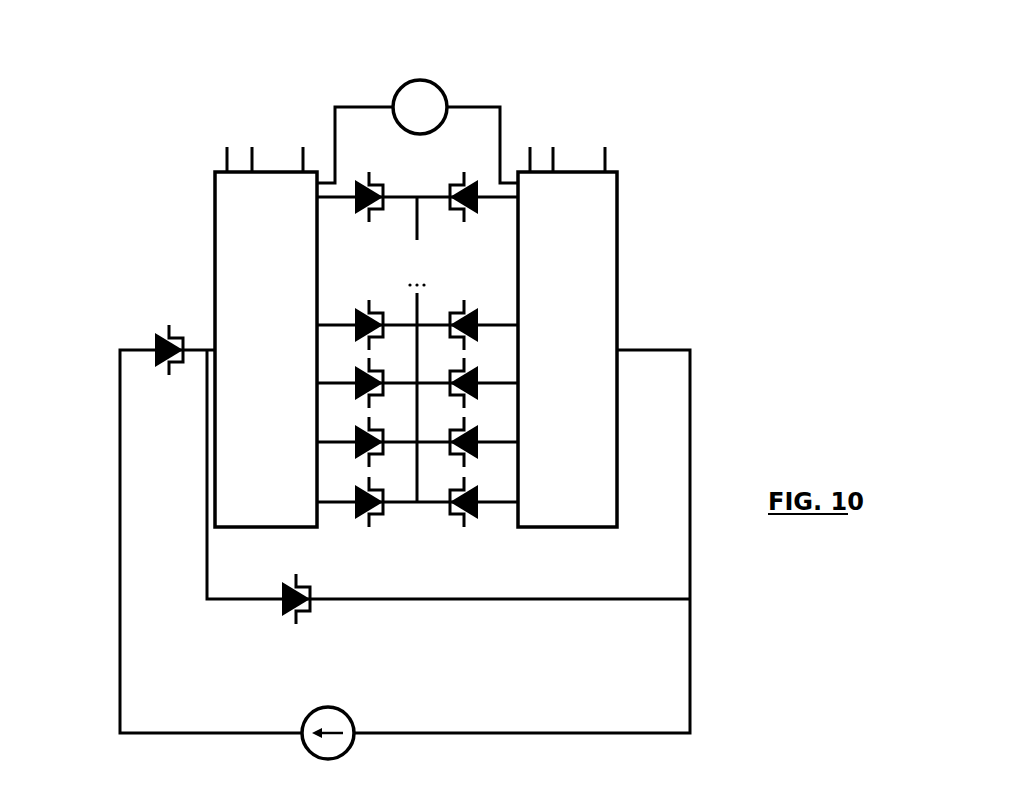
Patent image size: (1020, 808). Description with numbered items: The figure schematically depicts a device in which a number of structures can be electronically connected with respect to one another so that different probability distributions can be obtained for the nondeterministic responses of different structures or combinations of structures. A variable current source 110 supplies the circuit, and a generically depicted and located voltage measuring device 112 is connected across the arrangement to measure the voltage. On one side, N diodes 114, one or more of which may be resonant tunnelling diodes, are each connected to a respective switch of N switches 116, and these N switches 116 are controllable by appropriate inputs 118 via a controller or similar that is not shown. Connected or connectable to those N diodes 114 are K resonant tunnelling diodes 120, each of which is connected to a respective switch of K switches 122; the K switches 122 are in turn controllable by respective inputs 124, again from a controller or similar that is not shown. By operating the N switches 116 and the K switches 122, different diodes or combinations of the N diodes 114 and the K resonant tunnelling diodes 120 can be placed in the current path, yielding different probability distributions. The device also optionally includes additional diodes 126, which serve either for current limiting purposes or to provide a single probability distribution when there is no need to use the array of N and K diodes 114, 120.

The variable current source 110 is at (305, 705).
The voltage measuring device 112 is at (392, 87).
The N diodes 114 is at (371, 530).
The N switches 116 is at (215, 252).
The inputs 118 is at (200, 126).
The K resonant tunnelling diodes 120 is at (483, 530).
The K switches 122 is at (632, 255).
The inputs 124 is at (625, 128).
The additional diodes 126 is at (138, 331).